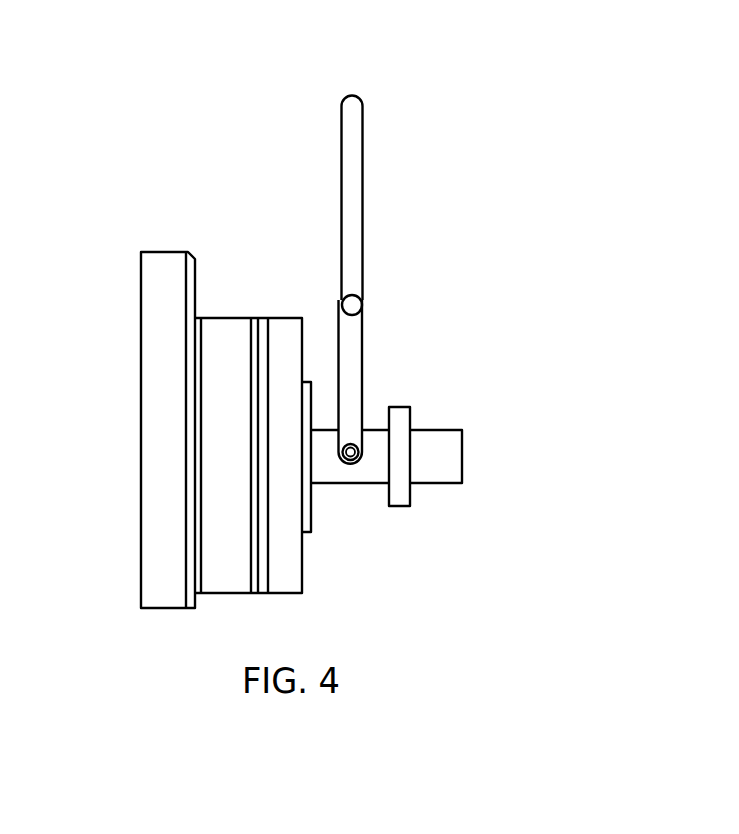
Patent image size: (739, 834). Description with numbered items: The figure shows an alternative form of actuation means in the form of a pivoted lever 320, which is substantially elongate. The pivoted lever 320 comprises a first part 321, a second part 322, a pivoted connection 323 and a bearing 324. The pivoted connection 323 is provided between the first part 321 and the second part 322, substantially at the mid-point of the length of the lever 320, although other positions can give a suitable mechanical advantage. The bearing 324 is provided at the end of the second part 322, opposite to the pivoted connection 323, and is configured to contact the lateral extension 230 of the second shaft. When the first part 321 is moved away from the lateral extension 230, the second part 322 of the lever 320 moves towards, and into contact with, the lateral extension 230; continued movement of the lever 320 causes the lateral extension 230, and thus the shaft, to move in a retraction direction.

The pivoted lever 320 is at (473, 308).
The first part 321 is at (353, 195).
The second part 322 is at (350, 383).
The pivoted connection 323 is at (353, 305).
The bearing 324 is at (353, 462).
The lateral extension 230 is at (400, 508).